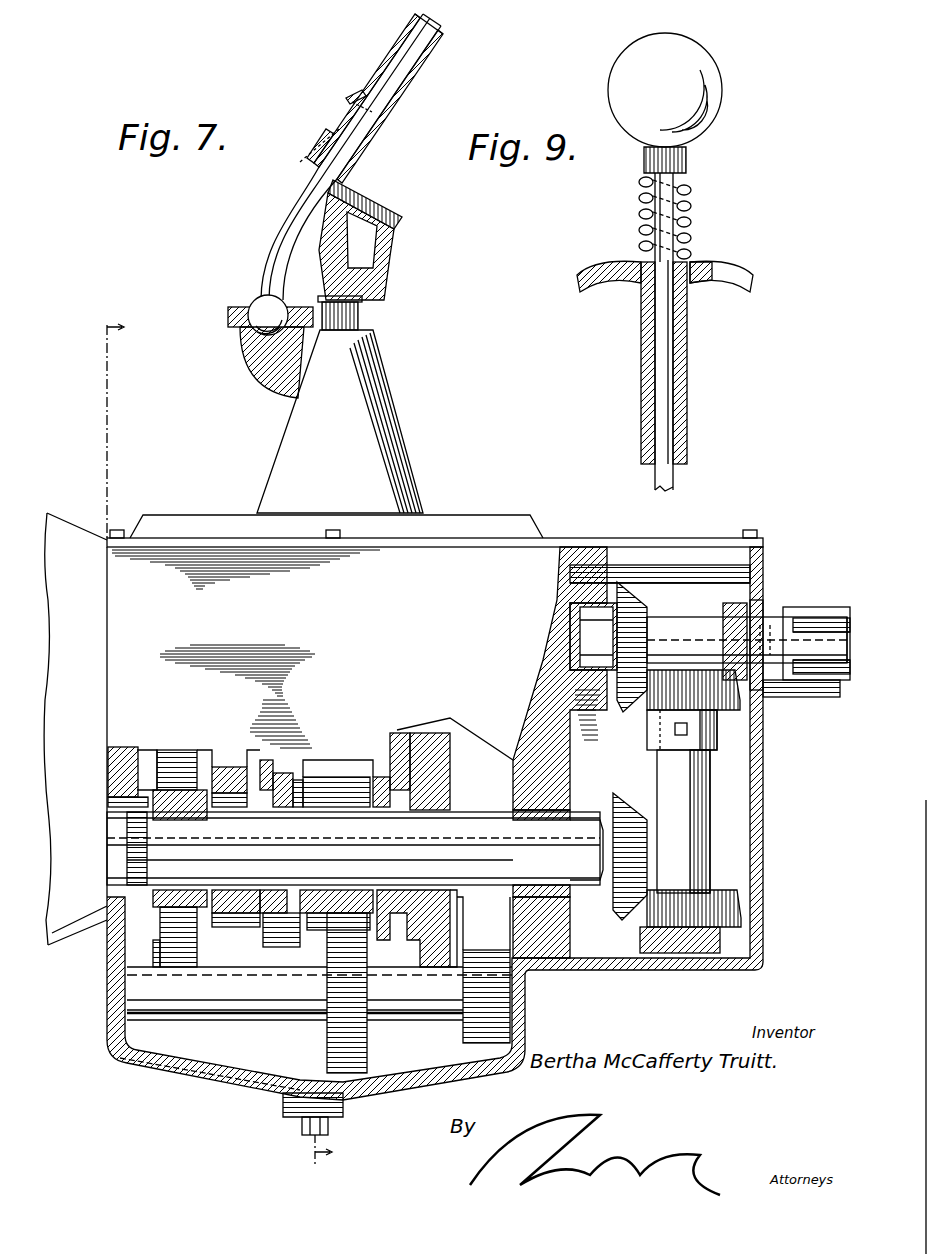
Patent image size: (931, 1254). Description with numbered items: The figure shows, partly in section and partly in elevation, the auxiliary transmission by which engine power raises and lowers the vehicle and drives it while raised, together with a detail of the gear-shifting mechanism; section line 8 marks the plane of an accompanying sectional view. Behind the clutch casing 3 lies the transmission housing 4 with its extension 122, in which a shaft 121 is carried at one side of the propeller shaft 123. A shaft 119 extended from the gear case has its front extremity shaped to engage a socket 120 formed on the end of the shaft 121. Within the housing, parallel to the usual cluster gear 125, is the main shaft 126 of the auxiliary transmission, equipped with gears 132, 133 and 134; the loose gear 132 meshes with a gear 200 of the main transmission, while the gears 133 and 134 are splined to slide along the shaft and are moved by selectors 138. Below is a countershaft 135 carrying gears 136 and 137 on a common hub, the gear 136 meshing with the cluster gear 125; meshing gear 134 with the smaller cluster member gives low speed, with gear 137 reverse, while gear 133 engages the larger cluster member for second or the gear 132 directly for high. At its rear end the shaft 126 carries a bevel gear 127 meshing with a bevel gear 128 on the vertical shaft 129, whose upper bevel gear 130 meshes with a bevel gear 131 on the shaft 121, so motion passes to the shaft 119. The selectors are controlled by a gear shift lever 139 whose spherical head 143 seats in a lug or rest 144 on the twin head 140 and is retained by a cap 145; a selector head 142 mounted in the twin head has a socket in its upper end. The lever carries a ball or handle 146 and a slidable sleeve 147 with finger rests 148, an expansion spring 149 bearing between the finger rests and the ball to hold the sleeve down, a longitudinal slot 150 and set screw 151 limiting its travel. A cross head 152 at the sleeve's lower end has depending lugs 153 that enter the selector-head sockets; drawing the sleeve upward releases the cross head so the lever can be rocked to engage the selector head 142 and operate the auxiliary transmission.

In FIG. 7, the clutch casing 3 is at (75, 729).
In FIG. 7, the transmission housing 4 is at (356, 649).
In FIG. 7, the section line 8 is at (216, 742).
In FIG. 7, the shaft 119 is at (813, 630).
In FIG. 7, the socket 120 is at (823, 697).
In FIG. 7, the shaft 121 is at (685, 624).
In FIG. 7, the extension 122 is at (752, 808).
In FIG. 7, the propeller shaft 123 is at (776, 700).
In FIG. 7, the cluster gear 125 is at (331, 790).
In FIG. 7, the main shaft 126 is at (355, 853).
In FIG. 7, the bevel gear 127 is at (633, 795).
In FIG. 7, the bevel gear 128 is at (735, 908).
In FIG. 7, the shaft 129 is at (687, 832).
In FIG. 7, the bevel gear 130 is at (645, 704).
In FIG. 7, the bevel gear 131 is at (634, 597).
In FIG. 7, the gear 132 is at (182, 786).
In FIG. 7, the gear 133 is at (240, 920).
In FIG. 7, the gear 134 is at (447, 939).
In FIG. 7, the countershaft 135 is at (274, 998).
In FIG. 7, the gear 136 is at (361, 1068).
In FIG. 7, the gear 137 is at (483, 1035).
In FIG. 7, the selectors 138 is at (268, 790).
In FIG. 7, the gear shift lever 139 is at (297, 211).
In FIG. 9, the gear shift lever 139 is at (676, 472).
In FIG. 7, the twin head 140 is at (393, 437).
In FIG. 7, the selector head 142 is at (346, 311).
In FIG. 7, the ball or spherical head 143 is at (254, 366).
In FIG. 7, the lug or rest 144 is at (246, 342).
In FIG. 7, the cap 145 is at (240, 310).
In FIG. 9, the ball or handle 146 is at (695, 106).
In FIG. 7, the sleeve 147 is at (425, 74).
In FIG. 9, the sleeve 147 is at (689, 387).
In FIG. 9, the finger rests 148 is at (722, 272).
In FIG. 9, the expansion spring 149 is at (688, 222).
In FIG. 7, the longitudinal slot 150 is at (336, 130).
In FIG. 7, the set screw 151 is at (354, 96).
In FIG. 7, the cross head 152 is at (366, 200).
In FIG. 7, the depending lug 153 is at (364, 248).
In FIG. 7, the gear 200 is at (165, 961).